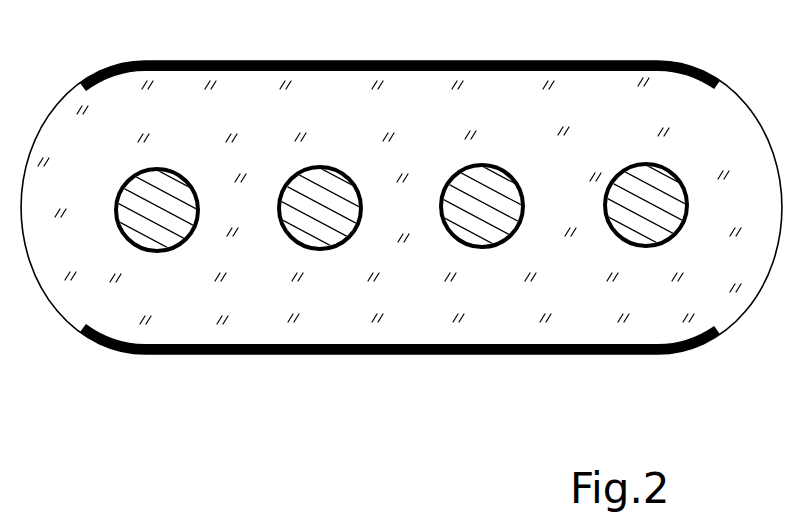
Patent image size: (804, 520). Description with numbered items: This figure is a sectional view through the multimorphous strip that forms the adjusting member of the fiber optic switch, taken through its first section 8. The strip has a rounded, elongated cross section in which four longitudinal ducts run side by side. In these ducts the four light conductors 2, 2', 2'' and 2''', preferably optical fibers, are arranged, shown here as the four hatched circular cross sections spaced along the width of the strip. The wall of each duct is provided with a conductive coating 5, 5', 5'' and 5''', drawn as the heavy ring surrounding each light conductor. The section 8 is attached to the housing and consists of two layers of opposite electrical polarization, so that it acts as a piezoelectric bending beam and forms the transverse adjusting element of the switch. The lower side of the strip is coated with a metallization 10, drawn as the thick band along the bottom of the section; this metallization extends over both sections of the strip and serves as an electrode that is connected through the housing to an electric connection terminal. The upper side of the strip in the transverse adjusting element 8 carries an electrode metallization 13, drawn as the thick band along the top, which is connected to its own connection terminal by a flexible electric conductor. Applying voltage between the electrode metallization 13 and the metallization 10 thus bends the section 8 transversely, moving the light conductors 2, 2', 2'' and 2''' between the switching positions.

The light conductor 2 is at (121, 269).
The light conductor 2' is at (320, 268).
The light conductor 2'' is at (482, 266).
The light conductor 2''' is at (646, 265).
The conductive coating 5 is at (157, 191).
The conductive coating 5' is at (322, 190).
The conductive coating 5'' is at (489, 188).
The conductive coating 5''' is at (655, 187).
The first section 8 is at (401, 207).
The metallization 10 is at (405, 354).
The electrode metallization 13 is at (404, 62).